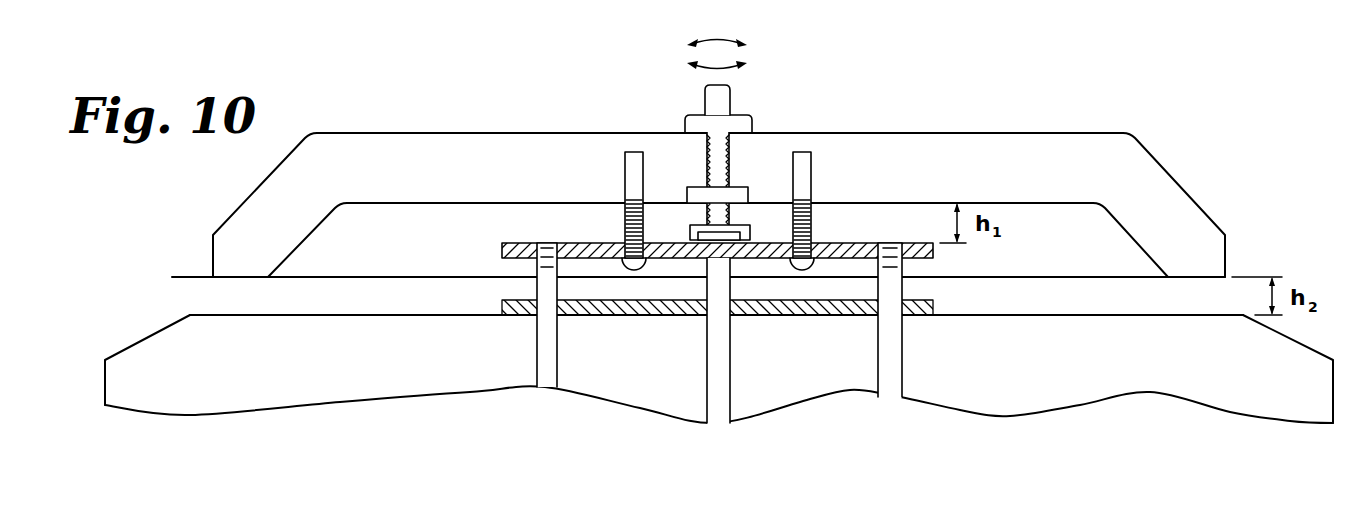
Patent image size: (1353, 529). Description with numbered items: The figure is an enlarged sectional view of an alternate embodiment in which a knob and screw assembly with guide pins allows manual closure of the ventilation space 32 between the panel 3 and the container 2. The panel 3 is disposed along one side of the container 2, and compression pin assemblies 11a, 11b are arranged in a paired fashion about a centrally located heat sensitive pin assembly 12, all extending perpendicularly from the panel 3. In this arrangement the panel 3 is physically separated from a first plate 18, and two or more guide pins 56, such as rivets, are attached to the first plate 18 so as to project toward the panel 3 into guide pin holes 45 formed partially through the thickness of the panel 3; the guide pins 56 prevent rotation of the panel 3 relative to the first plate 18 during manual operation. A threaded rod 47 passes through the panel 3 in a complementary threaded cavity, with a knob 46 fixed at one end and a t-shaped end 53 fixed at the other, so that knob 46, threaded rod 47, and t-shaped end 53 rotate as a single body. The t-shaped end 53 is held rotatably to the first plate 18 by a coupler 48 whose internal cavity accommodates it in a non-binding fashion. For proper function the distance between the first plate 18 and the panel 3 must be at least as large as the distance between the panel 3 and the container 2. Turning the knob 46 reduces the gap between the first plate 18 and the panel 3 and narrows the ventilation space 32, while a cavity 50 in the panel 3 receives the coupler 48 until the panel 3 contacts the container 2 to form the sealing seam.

The container 2 is at (118, 352).
The panel 3 is at (1178, 185).
The compression pin assembly 11a is at (557, 363).
The compression pin assembly 11b is at (902, 362).
The heat sensitive pin assembly 12 is at (730, 363).
The first plate 18 is at (934, 252).
The ventilation space 32 is at (207, 277).
The guide pin hole 45 is at (623, 230).
The knob 46 is at (752, 117).
The threaded rod 47 is at (707, 167).
The coupler 48 is at (688, 225).
The cavity 50 is at (750, 200).
The t-shaped end 53 is at (750, 237).
The guide pin 56 is at (623, 173).